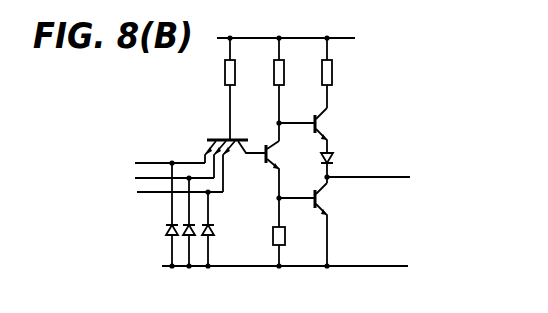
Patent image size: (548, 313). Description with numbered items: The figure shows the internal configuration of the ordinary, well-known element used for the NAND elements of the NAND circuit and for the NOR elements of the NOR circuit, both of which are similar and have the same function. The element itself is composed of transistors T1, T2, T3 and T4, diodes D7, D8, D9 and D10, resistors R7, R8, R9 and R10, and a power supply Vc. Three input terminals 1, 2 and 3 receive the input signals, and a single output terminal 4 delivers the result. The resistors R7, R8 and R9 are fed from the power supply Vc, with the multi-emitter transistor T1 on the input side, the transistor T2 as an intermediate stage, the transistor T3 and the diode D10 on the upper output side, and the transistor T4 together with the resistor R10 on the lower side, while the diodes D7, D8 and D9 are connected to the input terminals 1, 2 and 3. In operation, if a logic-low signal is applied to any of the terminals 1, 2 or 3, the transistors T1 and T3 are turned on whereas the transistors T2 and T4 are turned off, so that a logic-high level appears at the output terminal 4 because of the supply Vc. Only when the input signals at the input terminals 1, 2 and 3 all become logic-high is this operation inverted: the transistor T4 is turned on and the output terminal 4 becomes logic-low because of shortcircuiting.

The power supply Vc is at (327, 38).
The resistor R7 is at (235, 81).
The resistor R8 is at (284, 81).
The resistor R9 is at (333, 72).
The resistor R10 is at (297, 229).
The transistor T1 is at (224, 138).
The transistor T2 is at (272, 152).
The transistor T3 is at (322, 122).
The transistor T4 is at (322, 203).
The diode D7 is at (166, 233).
The diode D8 is at (196, 239).
The diode D9 is at (212, 228).
The diode D10 is at (336, 160).
The input terminal 1 is at (135, 163).
The input terminal 2 is at (135, 178).
The input terminal 3 is at (137, 192).
The output terminal 4 is at (378, 177).